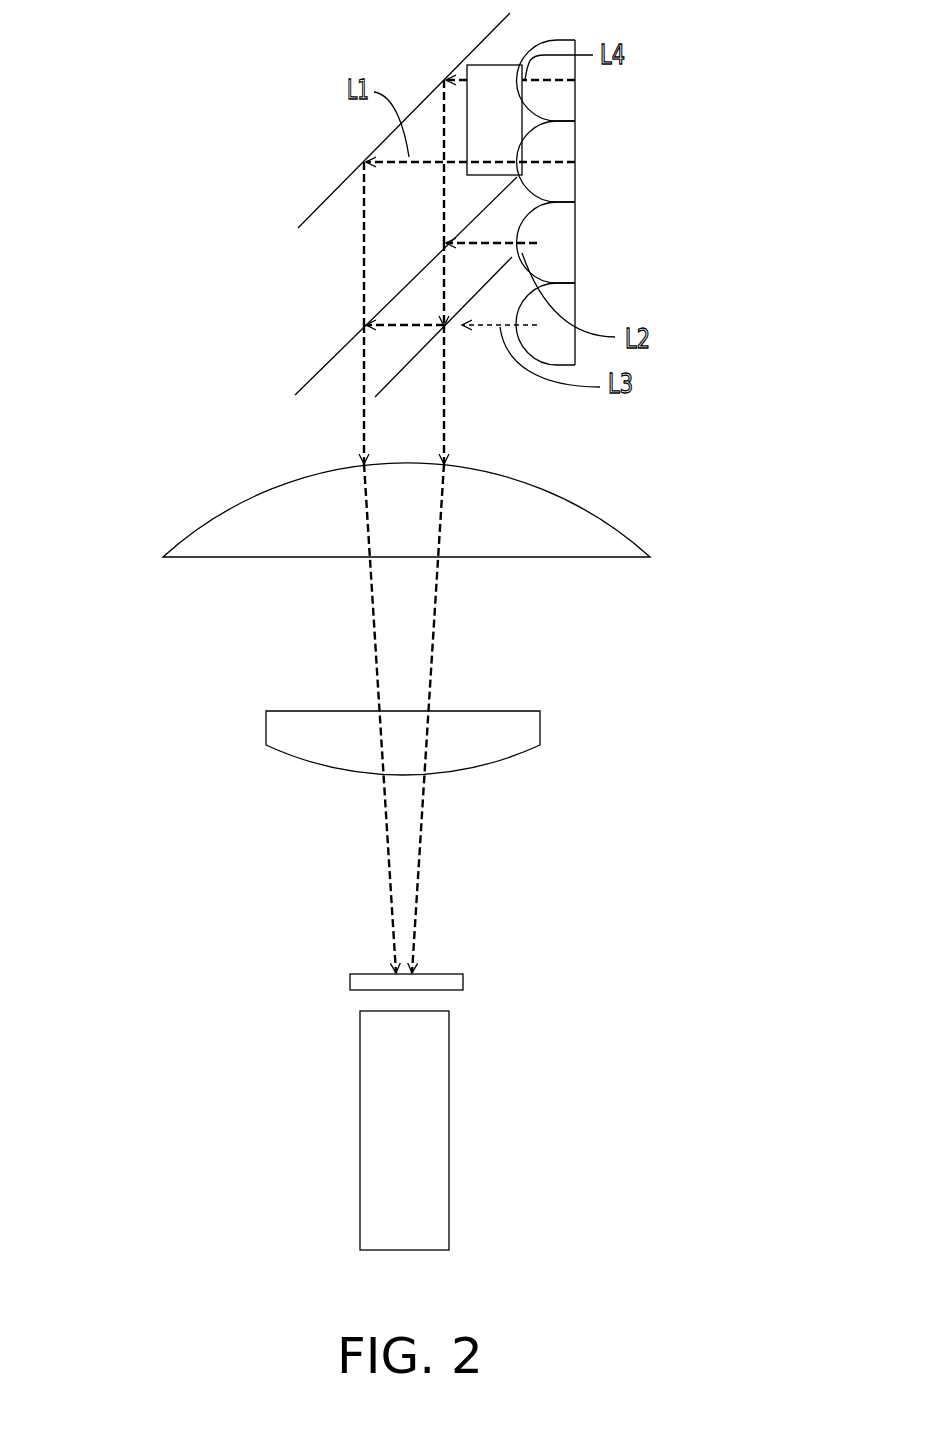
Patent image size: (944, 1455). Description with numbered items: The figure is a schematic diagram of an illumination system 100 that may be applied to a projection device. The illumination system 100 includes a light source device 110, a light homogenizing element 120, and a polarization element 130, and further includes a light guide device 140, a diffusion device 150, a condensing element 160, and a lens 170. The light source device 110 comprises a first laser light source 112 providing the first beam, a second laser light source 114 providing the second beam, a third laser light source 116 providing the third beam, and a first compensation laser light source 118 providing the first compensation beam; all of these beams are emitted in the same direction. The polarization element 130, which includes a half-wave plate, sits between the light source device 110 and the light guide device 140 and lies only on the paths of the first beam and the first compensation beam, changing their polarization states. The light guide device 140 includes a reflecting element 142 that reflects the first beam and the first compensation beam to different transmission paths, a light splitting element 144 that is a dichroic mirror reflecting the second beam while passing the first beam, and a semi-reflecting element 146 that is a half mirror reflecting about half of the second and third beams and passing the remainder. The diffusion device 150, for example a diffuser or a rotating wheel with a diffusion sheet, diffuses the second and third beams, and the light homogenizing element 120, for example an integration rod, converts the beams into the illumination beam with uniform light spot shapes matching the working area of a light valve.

The illumination system 100 is at (722, 1271).
The light source device 110 is at (629, 202).
The first laser light source 112 is at (568, 140).
The second laser light source 114 is at (567, 223).
The third laser light source 116 is at (601, 301).
The first compensation laser light source 118 is at (570, 100).
The light homogenizing element 120 is at (437, 1140).
The polarization element 130 is at (505, 80).
The light guide device 140 is at (316, 224).
The reflecting element 142 is at (330, 190).
The light splitting element 144 is at (333, 352).
The semi-reflecting element 146 is at (412, 360).
The diffusion device 150 is at (352, 983).
The condensing element 160 is at (210, 538).
The lens 170 is at (272, 727).